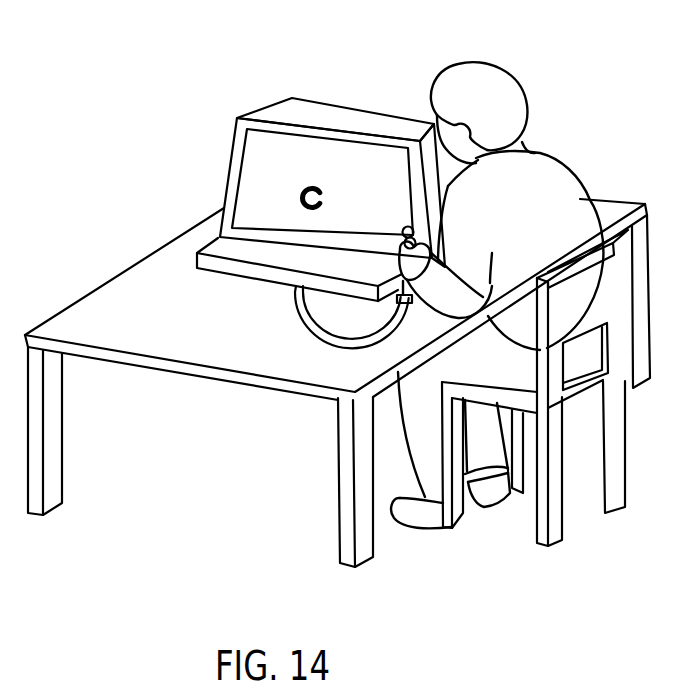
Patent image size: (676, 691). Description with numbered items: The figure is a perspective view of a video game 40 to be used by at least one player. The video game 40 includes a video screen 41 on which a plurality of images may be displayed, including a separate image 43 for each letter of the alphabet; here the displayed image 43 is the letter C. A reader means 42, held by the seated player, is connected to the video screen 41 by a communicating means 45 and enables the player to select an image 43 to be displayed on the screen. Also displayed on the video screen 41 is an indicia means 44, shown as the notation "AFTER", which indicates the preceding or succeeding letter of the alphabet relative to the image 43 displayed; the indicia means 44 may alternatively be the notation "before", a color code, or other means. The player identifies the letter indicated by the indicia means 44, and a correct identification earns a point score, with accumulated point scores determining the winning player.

The video game 40 is at (334, 100).
The video screen 41 is at (253, 213).
The reader means 42 is at (406, 228).
The image 43 is at (302, 190).
The indicia means 44 is at (277, 157).
The communicating means 45 is at (296, 321).